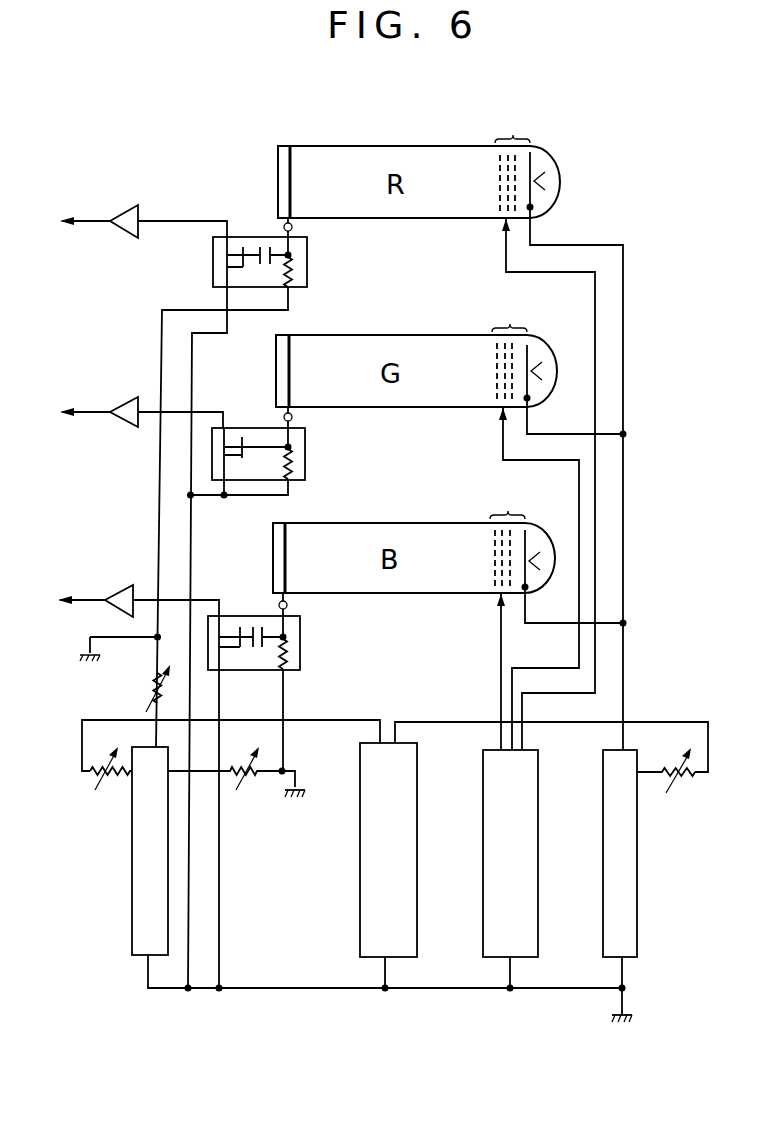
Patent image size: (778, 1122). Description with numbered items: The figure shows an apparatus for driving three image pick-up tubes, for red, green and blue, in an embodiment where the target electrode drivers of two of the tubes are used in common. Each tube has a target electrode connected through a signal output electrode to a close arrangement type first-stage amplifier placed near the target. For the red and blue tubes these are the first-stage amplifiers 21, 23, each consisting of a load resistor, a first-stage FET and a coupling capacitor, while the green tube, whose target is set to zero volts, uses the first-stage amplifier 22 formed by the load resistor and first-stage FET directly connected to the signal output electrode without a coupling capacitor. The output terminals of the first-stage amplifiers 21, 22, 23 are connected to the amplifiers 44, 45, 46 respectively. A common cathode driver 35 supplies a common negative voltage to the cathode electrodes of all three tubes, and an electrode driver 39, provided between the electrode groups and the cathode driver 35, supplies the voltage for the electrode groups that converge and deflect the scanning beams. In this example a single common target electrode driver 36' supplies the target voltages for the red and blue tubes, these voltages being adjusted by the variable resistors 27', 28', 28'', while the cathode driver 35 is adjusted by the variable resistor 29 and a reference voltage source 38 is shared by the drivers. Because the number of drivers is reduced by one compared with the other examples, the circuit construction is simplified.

The first-stage amplifier 21 is at (265, 239).
The first-stage amplifier 22 is at (289, 431).
The first-stage amplifier 23 is at (284, 775).
The variable resistor 27' is at (107, 792).
The variable resistor 28' is at (236, 792).
The variable resistor 28'' is at (129, 688).
The variable resistor 29 is at (683, 788).
The cathode driver 35 is at (637, 898).
The common target electrode driver 36' is at (120, 851).
The reference voltage source 38 is at (358, 858).
The electrode driver 39 is at (483, 865).
The amplifier 44 is at (130, 205).
The amplifier 45 is at (130, 397).
The amplifier 46 is at (127, 586).